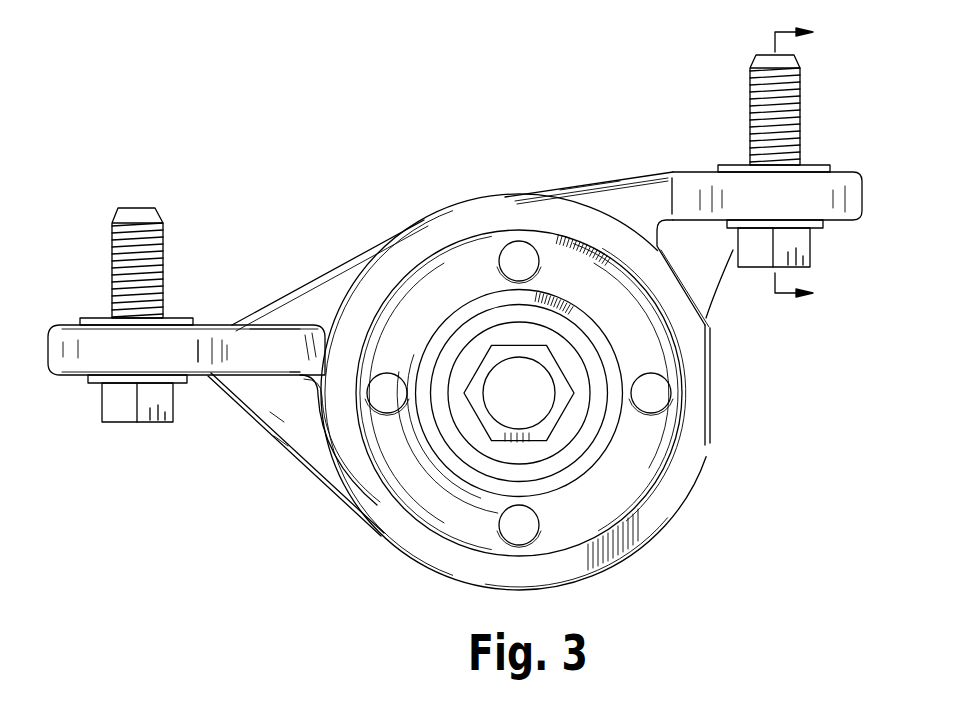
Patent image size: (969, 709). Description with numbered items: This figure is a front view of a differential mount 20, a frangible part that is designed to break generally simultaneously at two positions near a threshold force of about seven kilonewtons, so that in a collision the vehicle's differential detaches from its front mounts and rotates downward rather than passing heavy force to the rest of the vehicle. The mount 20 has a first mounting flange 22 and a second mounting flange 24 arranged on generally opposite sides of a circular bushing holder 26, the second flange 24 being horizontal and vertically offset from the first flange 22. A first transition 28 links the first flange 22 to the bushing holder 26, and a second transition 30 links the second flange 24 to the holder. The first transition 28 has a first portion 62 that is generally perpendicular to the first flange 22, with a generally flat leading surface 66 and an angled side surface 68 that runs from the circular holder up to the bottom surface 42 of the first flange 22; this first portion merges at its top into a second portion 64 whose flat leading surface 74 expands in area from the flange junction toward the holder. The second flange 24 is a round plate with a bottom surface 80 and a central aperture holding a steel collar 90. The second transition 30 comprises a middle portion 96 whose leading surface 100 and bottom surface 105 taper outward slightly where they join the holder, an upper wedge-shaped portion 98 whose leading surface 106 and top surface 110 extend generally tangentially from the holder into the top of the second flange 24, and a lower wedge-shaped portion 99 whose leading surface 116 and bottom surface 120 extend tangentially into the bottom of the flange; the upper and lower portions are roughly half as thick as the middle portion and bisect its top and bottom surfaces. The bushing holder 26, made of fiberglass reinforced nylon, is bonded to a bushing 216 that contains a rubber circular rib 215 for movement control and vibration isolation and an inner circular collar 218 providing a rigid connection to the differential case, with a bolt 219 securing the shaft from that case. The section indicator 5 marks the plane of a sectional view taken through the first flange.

The section line 5- 5 is at (803, 163).
The differential mount 20 is at (338, 580).
The first mounting flange 22 is at (872, 180).
The second mounting flange 24 is at (60, 338).
The bushing holder 26 is at (683, 512).
The first transition 28 is at (640, 197).
The second transition 30 is at (232, 350).
The bottom surface of the first mounting flange 42 is at (838, 222).
The first portion of the first transition 62 is at (696, 250).
The second portion of the first transition 64 is at (627, 207).
The leading surface of the first portion 66 is at (709, 238).
The side surface of the first portion 68 is at (707, 283).
The leading surface of the second portion 74 is at (578, 175).
The bottom surface of the second mounting flange 80 is at (88, 384).
The steel collar 90 is at (182, 318).
The first, middle, portion of the second transition 96 is at (313, 393).
The second, upper, portion of the second transition 98 is at (317, 297).
The third, lower, portion of the second transition 99 is at (277, 417).
The leading surface of the first portion of the second transition 100 is at (258, 350).
The bottom surface of the first portion of the second transition 105 is at (297, 350).
The leading surface of the second portion of the second transition 106 is at (340, 283).
The top surface of the second portion of the second transition 110 is at (285, 295).
The leading surface of the third portion of the second transition 116 is at (232, 392).
The bottom surface of the third portion of the second transition 120 is at (280, 440).
The circular rib 215 is at (463, 520).
The bushing 216 is at (590, 515).
The inner circular collar 218 is at (588, 465).
The bolt 219 is at (568, 409).